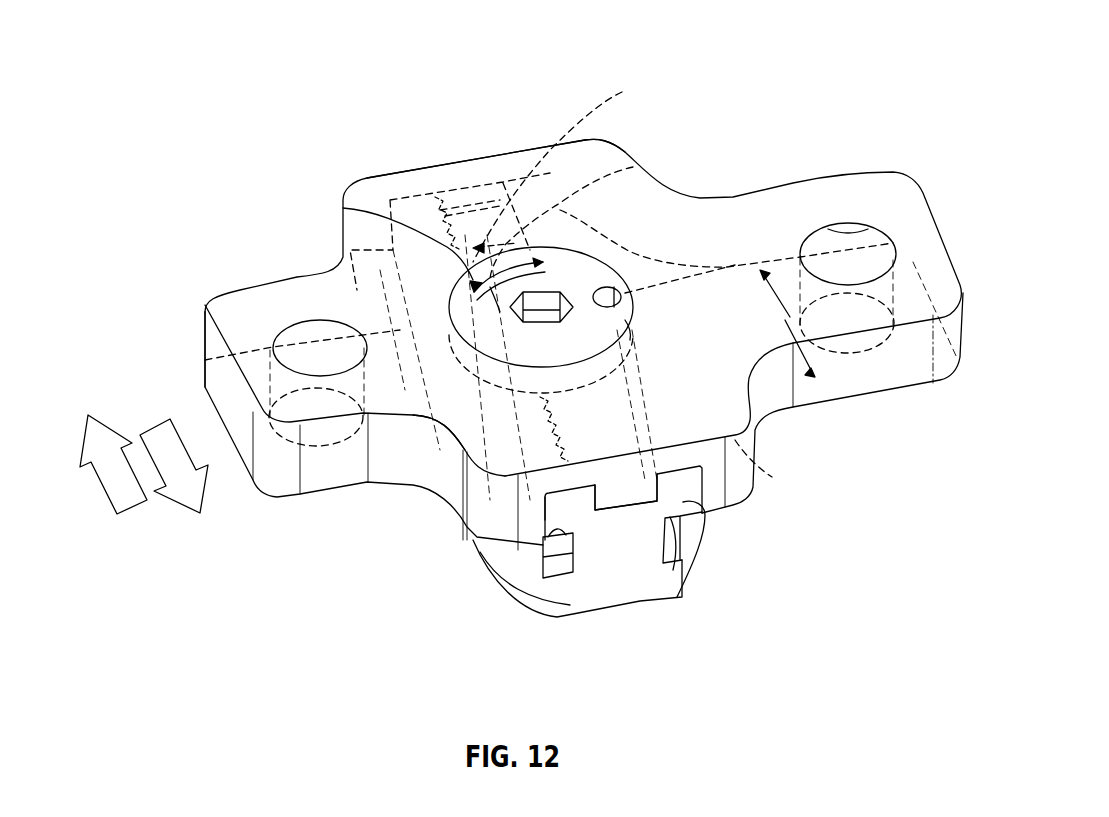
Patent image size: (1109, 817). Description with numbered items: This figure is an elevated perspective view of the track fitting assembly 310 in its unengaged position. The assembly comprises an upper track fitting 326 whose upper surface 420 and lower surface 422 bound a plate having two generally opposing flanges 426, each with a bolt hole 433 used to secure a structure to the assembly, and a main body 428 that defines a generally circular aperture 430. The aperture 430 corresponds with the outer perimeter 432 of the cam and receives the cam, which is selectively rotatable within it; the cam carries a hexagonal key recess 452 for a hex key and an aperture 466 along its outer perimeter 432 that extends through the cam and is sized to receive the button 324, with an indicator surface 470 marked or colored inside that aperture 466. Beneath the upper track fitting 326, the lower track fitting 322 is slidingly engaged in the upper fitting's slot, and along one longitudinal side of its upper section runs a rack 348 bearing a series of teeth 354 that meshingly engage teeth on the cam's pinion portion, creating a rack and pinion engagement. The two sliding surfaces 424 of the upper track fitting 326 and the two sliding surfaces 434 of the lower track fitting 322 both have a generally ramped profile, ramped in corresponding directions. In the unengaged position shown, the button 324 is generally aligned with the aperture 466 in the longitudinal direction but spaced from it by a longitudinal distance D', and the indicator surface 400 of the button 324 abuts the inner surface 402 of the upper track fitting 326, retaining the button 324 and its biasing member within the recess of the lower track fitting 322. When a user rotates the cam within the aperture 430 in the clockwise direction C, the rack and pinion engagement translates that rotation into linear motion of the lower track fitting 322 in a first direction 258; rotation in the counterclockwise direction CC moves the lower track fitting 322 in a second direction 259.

The track fitting assembly 310 is at (742, 41).
The lower track fitting 322 is at (606, 609).
The button 324 is at (772, 477).
The upper track fitting 326 is at (620, 150).
The rack 348 is at (635, 167).
The teeth 354 is at (624, 92).
The indicator surface 400 is at (757, 455).
The inner surface 402 is at (693, 520).
The upper surface 420 is at (437, 176).
The lower surface 422 is at (427, 493).
The sliding surfaces 424 is at (704, 514).
The flanges 426 is at (248, 290).
The main body 428 is at (738, 287).
The aperture 430 is at (630, 333).
The outer perimeter 432 is at (563, 367).
The bolt hole 433 is at (327, 377).
The sliding surfaces 434 is at (560, 530).
The key recess 452 is at (531, 288).
The aperture 466 is at (622, 297).
The indicator surface 470 is at (627, 333).
The first direction 258 is at (118, 488).
The second direction 259 is at (200, 512).
The clockwise direction C is at (500, 315).
The counterclockwise direction CC is at (343, 208).
The longitudinal distance D' is at (787, 323).